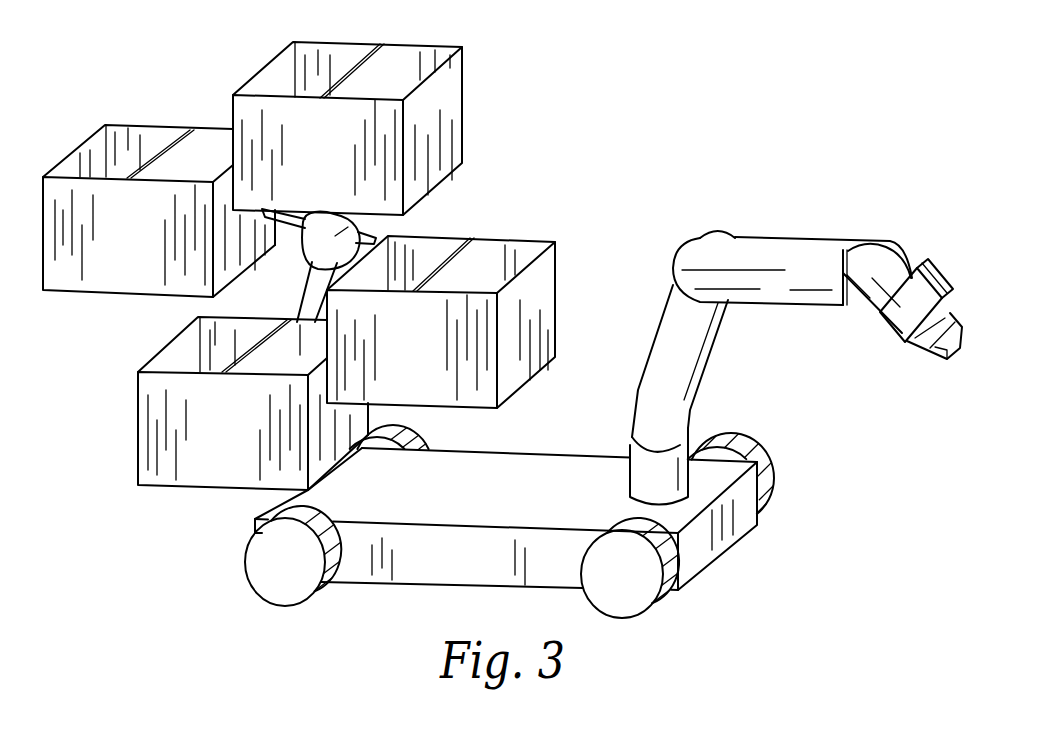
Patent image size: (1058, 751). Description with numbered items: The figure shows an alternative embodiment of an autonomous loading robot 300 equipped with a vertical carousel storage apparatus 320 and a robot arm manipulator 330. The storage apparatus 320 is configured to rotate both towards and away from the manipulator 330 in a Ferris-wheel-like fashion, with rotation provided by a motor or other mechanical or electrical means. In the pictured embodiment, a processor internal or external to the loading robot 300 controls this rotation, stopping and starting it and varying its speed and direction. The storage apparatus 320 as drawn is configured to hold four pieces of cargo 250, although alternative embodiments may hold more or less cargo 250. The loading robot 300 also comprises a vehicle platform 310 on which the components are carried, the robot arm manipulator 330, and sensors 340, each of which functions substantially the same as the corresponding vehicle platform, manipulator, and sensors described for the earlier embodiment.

The cargo 250 is at (133, 235).
The loading robot 300 is at (656, 134).
The vehicle platform 310 is at (457, 555).
The storage apparatus 320 is at (362, 230).
The robot arm manipulator 330 is at (786, 263).
The sensors 340 is at (936, 262).